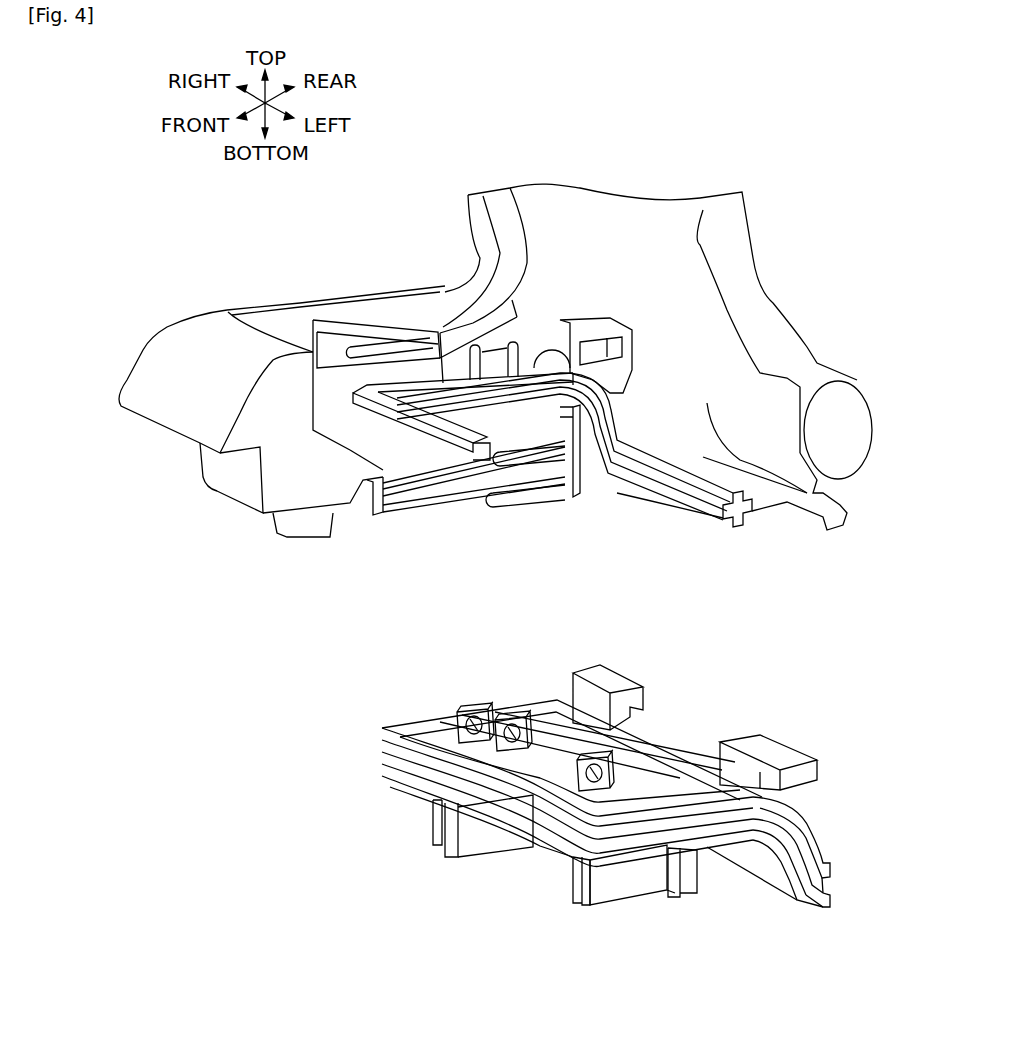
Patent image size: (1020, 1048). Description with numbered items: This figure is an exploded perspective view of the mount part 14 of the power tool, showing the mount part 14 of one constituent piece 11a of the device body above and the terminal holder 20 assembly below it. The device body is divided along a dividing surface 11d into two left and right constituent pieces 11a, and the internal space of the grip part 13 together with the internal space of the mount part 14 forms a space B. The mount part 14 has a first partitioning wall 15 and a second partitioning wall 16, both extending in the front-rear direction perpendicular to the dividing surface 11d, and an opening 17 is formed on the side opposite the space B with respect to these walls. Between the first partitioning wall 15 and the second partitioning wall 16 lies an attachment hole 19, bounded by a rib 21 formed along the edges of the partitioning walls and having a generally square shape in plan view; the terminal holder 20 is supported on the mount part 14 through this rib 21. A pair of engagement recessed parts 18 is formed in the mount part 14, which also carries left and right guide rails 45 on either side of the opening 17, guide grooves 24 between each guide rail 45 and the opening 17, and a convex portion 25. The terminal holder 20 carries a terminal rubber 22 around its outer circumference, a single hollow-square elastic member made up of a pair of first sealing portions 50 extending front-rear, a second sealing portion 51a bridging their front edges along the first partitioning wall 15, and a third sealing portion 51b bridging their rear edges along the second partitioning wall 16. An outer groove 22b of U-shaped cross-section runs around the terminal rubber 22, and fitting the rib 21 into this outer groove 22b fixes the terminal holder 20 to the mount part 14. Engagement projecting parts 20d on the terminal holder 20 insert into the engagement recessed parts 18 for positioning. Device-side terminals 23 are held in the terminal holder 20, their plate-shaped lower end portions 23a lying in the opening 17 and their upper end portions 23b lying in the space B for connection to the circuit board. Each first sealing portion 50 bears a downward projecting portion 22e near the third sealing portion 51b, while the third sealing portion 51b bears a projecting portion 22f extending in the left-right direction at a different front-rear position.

The constituent piece 11a is at (675, 172).
The space B is at (620, 300).
The grip part 13 is at (497, 213).
The mount part 14 is at (410, 300).
The convex portion 25 is at (232, 472).
The dividing surface 11d is at (302, 478).
The first partitioning wall 15 is at (398, 443).
The guide rail 45 is at (455, 512).
The rib 21 is at (493, 450).
The guide groove 24 is at (497, 433).
The attachment hole 19 is at (586, 470).
The opening 17 is at (601, 478).
The second partitioning wall 16 is at (740, 480).
The engagement recessed part 18 is at (597, 342).
The first sealing portion 50 is at (427, 725).
The terminal rubber 22 is at (378, 750).
The terminal holder 20 is at (540, 815).
The outer groove 22b is at (806, 818).
The projecting portion 22e is at (760, 855).
The projecting portion 22f is at (820, 908).
The engagement projecting part 20d is at (583, 670).
The upper end portion 23b is at (468, 708).
The device-side terminal 23 is at (415, 805).
The lower end portion 23a is at (435, 831).
The second sealing portion 51a is at (446, 850).
The third sealing portion 51b is at (715, 855).